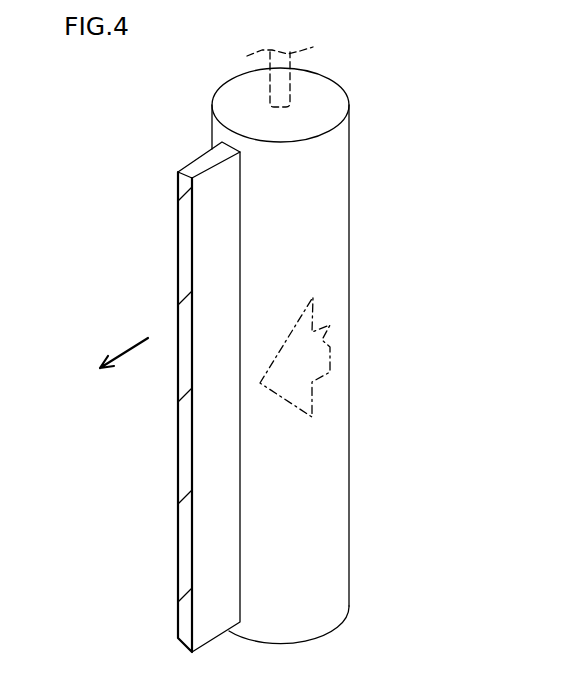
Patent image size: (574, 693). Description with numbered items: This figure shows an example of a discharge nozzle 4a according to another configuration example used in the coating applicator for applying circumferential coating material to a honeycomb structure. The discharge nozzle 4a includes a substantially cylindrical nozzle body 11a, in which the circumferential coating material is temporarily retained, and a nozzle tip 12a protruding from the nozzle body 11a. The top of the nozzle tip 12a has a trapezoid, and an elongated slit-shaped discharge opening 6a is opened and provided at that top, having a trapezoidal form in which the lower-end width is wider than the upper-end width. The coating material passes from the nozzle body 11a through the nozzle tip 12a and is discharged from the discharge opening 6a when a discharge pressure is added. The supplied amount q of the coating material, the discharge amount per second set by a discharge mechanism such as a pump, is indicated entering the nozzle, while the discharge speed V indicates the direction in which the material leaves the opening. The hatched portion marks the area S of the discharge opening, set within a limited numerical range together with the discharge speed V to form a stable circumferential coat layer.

The discharge nozzle 4a is at (113, 217).
The nozzle body 11a is at (332, 465).
The discharge opening 6a is at (192, 427).
The nozzle tip 12a is at (212, 608).
The area of the discharge opening S is at (182, 580).
The supplied amount of the circumferential coating material q is at (357, 337).
The discharge speed V is at (128, 347).